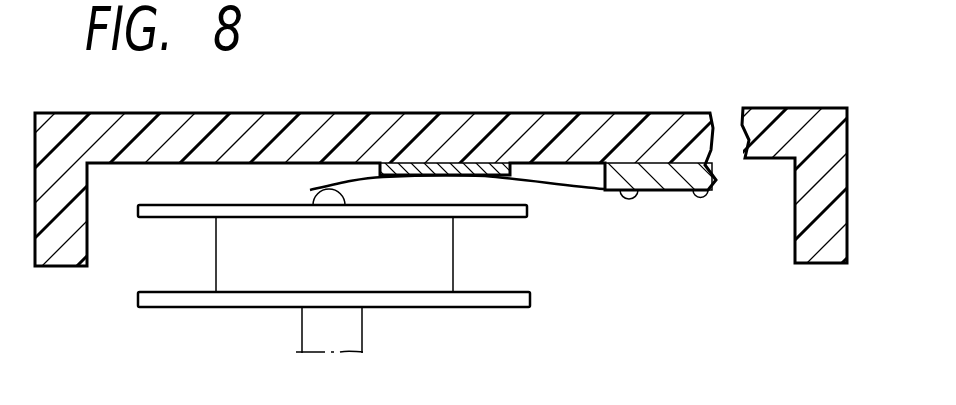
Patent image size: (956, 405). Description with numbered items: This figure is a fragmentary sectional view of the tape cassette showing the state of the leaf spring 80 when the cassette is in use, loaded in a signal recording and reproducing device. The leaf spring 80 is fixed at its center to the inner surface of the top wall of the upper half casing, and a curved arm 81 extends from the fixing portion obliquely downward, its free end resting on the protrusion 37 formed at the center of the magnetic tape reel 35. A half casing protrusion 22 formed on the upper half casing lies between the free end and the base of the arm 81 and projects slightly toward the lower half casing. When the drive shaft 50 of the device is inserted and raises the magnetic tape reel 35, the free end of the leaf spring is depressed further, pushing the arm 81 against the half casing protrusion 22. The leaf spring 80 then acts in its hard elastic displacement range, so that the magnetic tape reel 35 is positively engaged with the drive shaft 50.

The half casing protrusion 22 is at (482, 158).
The magnetic tape reel 35 is at (497, 267).
The protrusion 37 is at (332, 195).
The drive shaft 50 is at (314, 332).
The leaf spring 80 is at (597, 194).
The arm 81 is at (568, 191).